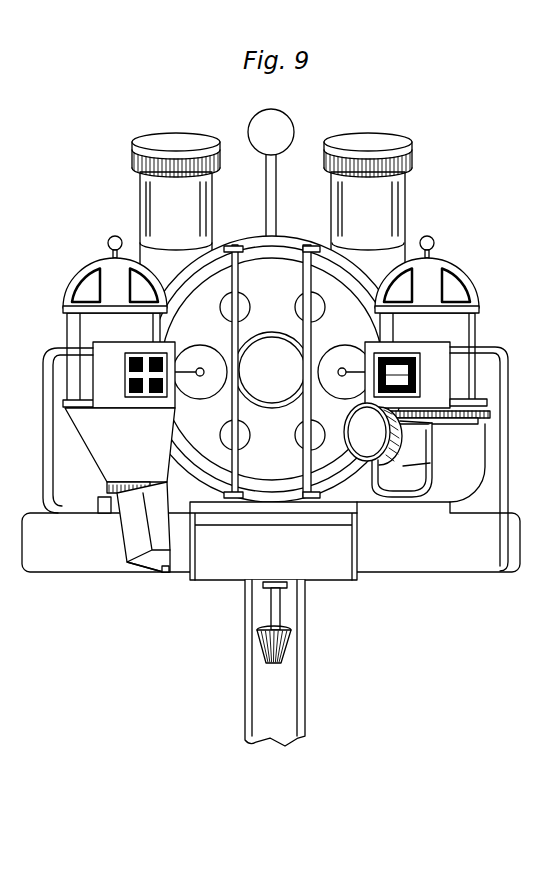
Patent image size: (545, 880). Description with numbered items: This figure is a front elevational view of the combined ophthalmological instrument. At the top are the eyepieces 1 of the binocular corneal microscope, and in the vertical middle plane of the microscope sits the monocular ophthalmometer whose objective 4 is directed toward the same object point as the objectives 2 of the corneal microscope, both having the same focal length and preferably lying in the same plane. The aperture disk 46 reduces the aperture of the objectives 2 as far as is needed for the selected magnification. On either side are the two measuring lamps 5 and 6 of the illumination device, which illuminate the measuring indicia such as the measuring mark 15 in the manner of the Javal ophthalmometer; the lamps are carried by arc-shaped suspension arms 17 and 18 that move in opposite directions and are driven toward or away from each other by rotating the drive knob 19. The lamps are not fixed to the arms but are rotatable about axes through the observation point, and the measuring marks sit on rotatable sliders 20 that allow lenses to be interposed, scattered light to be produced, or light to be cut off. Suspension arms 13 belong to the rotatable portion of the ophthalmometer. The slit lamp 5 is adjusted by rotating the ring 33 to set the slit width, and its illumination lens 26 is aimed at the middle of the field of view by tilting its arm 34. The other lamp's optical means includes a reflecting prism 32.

The eyepiece 1 is at (163, 132).
The objective 2 is at (205, 345).
The objective 4 is at (273, 365).
The lamp 5 is at (429, 273).
The lamp 6 is at (113, 290).
The suspension arm 13 is at (475, 233).
The measuring mark 15 is at (409, 377).
The suspension arm 17 is at (489, 459).
The suspension arm 18 is at (62, 468).
The drive knob 19 is at (262, 651).
The rotatable slider 20 is at (107, 360).
The illumination lens 26 is at (373, 440).
The reflecting prism 32 is at (167, 572).
The ring 33 is at (489, 415).
The arm 34 is at (422, 457).
The aperture disk 46 is at (342, 313).